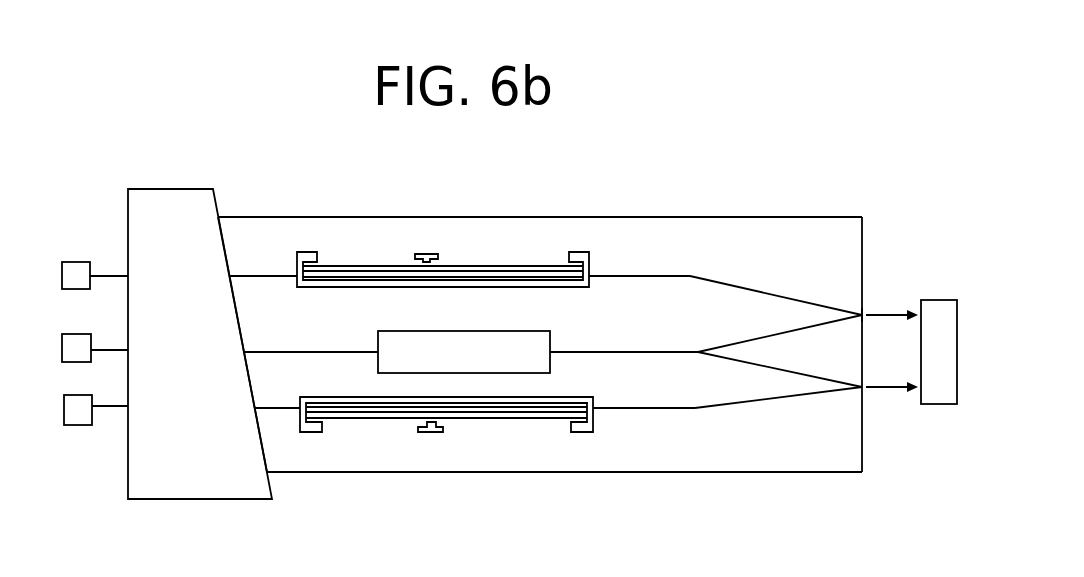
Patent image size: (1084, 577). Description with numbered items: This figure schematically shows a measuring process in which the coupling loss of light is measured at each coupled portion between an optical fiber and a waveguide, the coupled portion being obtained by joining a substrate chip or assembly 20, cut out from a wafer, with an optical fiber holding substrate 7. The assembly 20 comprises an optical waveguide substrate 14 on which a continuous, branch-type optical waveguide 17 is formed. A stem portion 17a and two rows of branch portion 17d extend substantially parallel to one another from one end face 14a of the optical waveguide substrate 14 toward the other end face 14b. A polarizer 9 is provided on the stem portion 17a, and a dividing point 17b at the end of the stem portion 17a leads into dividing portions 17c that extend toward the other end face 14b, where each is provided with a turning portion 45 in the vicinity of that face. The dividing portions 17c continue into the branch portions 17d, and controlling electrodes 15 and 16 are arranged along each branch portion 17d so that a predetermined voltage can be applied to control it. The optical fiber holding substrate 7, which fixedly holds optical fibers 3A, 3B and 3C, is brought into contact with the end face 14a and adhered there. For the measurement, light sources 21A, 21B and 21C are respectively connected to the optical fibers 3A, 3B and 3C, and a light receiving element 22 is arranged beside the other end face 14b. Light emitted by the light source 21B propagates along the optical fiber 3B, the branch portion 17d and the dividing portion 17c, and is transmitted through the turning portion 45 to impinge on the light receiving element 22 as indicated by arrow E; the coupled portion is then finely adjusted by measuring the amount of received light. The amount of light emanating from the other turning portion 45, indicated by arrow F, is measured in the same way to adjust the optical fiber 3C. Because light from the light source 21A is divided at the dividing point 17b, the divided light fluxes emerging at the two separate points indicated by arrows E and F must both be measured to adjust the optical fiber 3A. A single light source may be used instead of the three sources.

The optical fiber holding substrate 7 is at (167, 208).
The light source 21A is at (78, 346).
The light source 21B is at (78, 275).
The light source 21C is at (80, 425).
The optical fiber 3A is at (108, 349).
The optical fiber 3B is at (108, 276).
The optical fiber 3C is at (108, 406).
The substrate chip or assembly 20 is at (521, 291).
The optical waveguide substrate 14 is at (521, 318).
The end face 14a is at (257, 436).
The other end face 14b is at (858, 235).
The controlling electrode 16 is at (443, 225).
The controlling electrode 15 is at (537, 270).
The optical waveguide 17 is at (546, 290).
The stem portion 17a is at (285, 350).
The dividing point 17b is at (693, 350).
The dividing portion 17c is at (798, 295).
The branch portion 17d is at (627, 281).
The polarizer 9 is at (543, 338).
The turning portion 45 is at (865, 313).
The light receiving element 22 is at (937, 299).
The arrow E is at (889, 320).
The arrow F is at (893, 390).